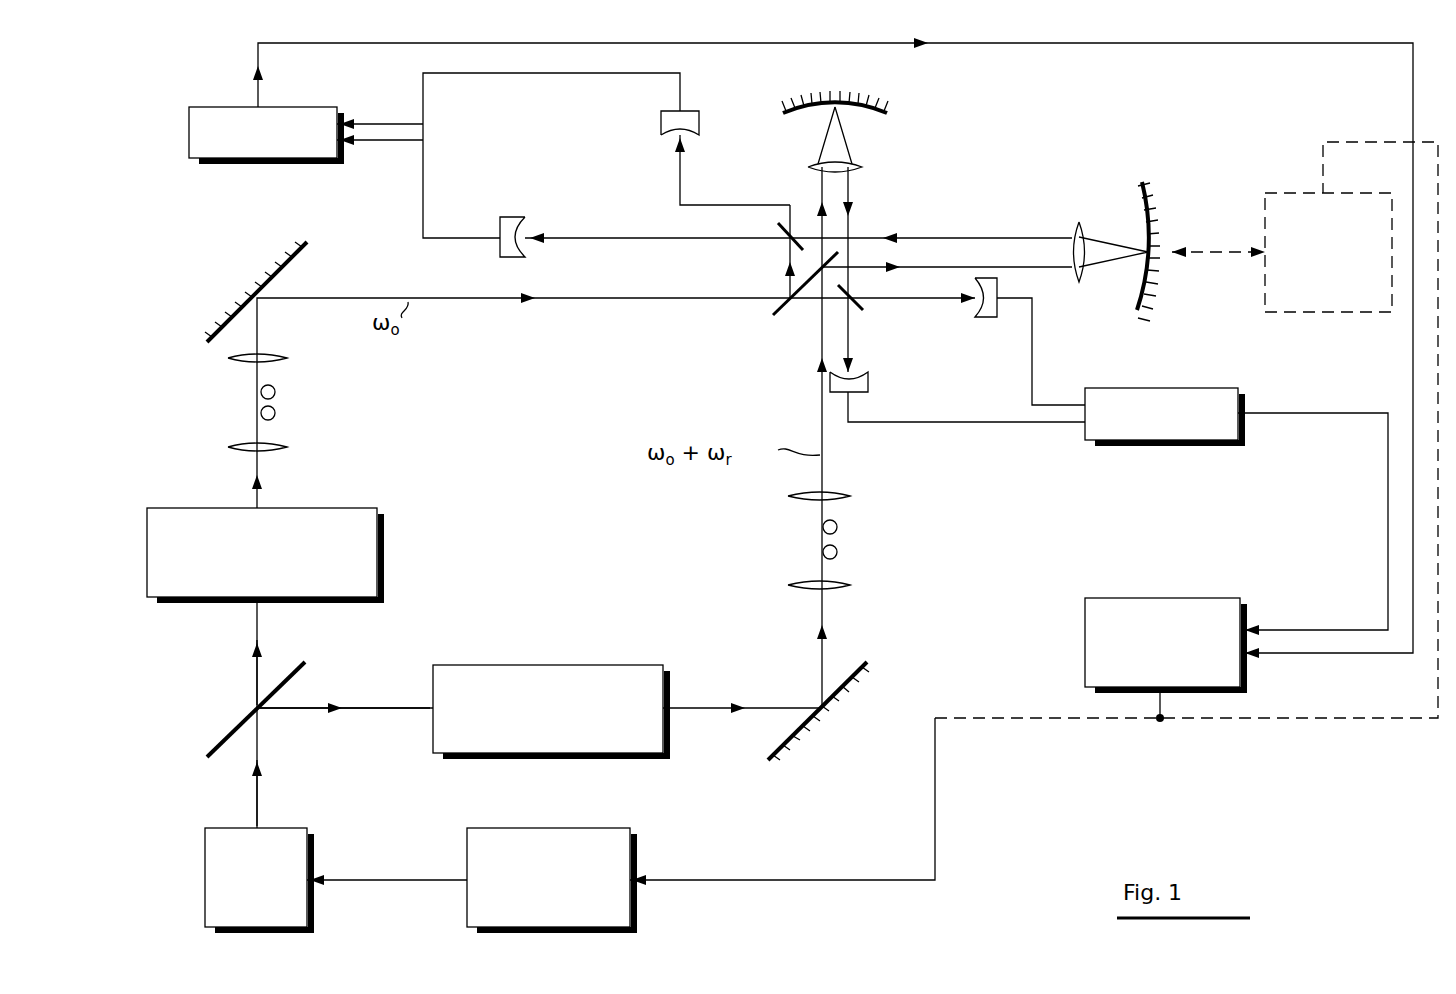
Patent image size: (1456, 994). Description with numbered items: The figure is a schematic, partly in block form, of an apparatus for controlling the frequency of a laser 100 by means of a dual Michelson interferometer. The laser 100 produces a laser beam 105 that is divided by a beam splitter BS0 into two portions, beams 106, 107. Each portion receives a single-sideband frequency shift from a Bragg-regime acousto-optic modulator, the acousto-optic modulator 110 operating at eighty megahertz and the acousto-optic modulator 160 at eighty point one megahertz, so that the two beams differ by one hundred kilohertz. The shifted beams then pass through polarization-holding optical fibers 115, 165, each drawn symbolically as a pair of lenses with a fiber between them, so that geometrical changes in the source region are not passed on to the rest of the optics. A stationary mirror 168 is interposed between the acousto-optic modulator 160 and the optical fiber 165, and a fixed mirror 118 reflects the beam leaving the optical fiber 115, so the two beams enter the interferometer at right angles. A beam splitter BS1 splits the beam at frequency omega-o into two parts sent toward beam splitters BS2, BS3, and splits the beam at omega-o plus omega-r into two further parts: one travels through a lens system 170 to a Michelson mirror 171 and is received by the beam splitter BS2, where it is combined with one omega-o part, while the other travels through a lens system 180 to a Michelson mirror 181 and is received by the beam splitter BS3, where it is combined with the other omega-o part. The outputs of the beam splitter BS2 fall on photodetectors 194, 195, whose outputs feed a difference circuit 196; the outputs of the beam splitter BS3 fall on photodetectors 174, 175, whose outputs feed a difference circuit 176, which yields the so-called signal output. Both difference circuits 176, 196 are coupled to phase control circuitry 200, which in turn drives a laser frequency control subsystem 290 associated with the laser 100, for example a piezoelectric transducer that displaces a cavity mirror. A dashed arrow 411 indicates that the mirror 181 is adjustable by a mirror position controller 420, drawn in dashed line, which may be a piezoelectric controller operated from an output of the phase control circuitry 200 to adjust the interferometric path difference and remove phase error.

The laser 100 is at (312, 826).
The laser beam 105 is at (258, 797).
The beam 106 is at (258, 668).
The beam 107 is at (360, 715).
The acousto-optic modulator 110 is at (385, 508).
The polarization-holding optical fiber 115 is at (288, 397).
The fixed mirror 118 is at (310, 255).
The acousto-optic modulator 160 is at (580, 665).
The polarization-holding optical fiber 165 is at (812, 543).
The stationary mirror 168 is at (847, 667).
The lens system 170 is at (862, 170).
The Michelson mirror 171 is at (880, 114).
The photodetector 174 is at (500, 218).
The photodetector 175 is at (698, 110).
The difference circuit 176 is at (190, 107).
The lens system 180 is at (1078, 222).
The Michelson mirror 181 is at (1137, 297).
The photodetector 194 is at (868, 387).
The photodetector 195 is at (985, 318).
The difference circuit 196 is at (1170, 388).
The phase control circuitry 200 is at (1218, 598).
The laser frequency control subsystem 290 is at (477, 828).
The dashed arrow 411 is at (1212, 258).
The mirror position controller 420 is at (1338, 313).
The beam splitter BS0 is at (293, 675).
The beam splitter BS1 is at (788, 318).
The beam splitter BS2 is at (862, 312).
The beam splitter BS3 is at (778, 226).